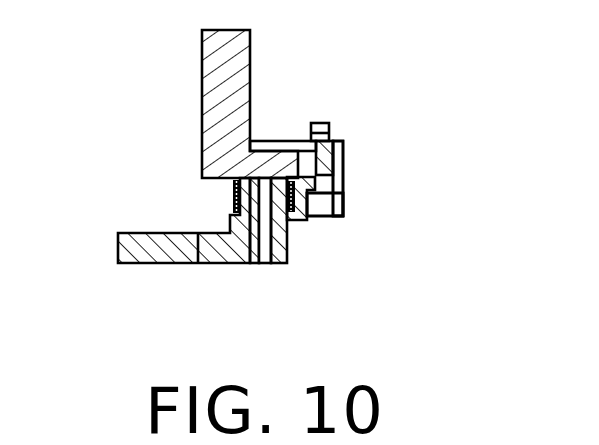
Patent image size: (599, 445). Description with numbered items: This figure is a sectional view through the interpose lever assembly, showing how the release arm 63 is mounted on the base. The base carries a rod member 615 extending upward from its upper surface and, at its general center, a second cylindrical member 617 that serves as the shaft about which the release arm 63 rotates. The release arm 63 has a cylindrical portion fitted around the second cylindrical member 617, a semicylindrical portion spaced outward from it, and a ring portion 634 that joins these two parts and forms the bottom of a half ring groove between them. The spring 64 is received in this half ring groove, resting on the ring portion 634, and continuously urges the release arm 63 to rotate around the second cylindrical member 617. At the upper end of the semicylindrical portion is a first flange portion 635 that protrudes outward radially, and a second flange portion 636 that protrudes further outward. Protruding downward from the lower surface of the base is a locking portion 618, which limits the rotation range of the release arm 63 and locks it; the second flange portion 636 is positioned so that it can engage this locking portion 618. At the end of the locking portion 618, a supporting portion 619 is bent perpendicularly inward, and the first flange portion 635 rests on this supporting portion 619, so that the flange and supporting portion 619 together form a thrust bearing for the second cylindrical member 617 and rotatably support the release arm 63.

The release arm 63 is at (134, 258).
The spring 64 is at (232, 195).
The rod member 615 is at (208, 66).
The second cylindrical member 617 is at (273, 263).
The locking portion 618 is at (337, 168).
The supporting portion 619 is at (310, 213).
The ring portion 634 is at (293, 220).
The first flange portion 635 is at (343, 195).
The second flange portion 636 is at (344, 181).